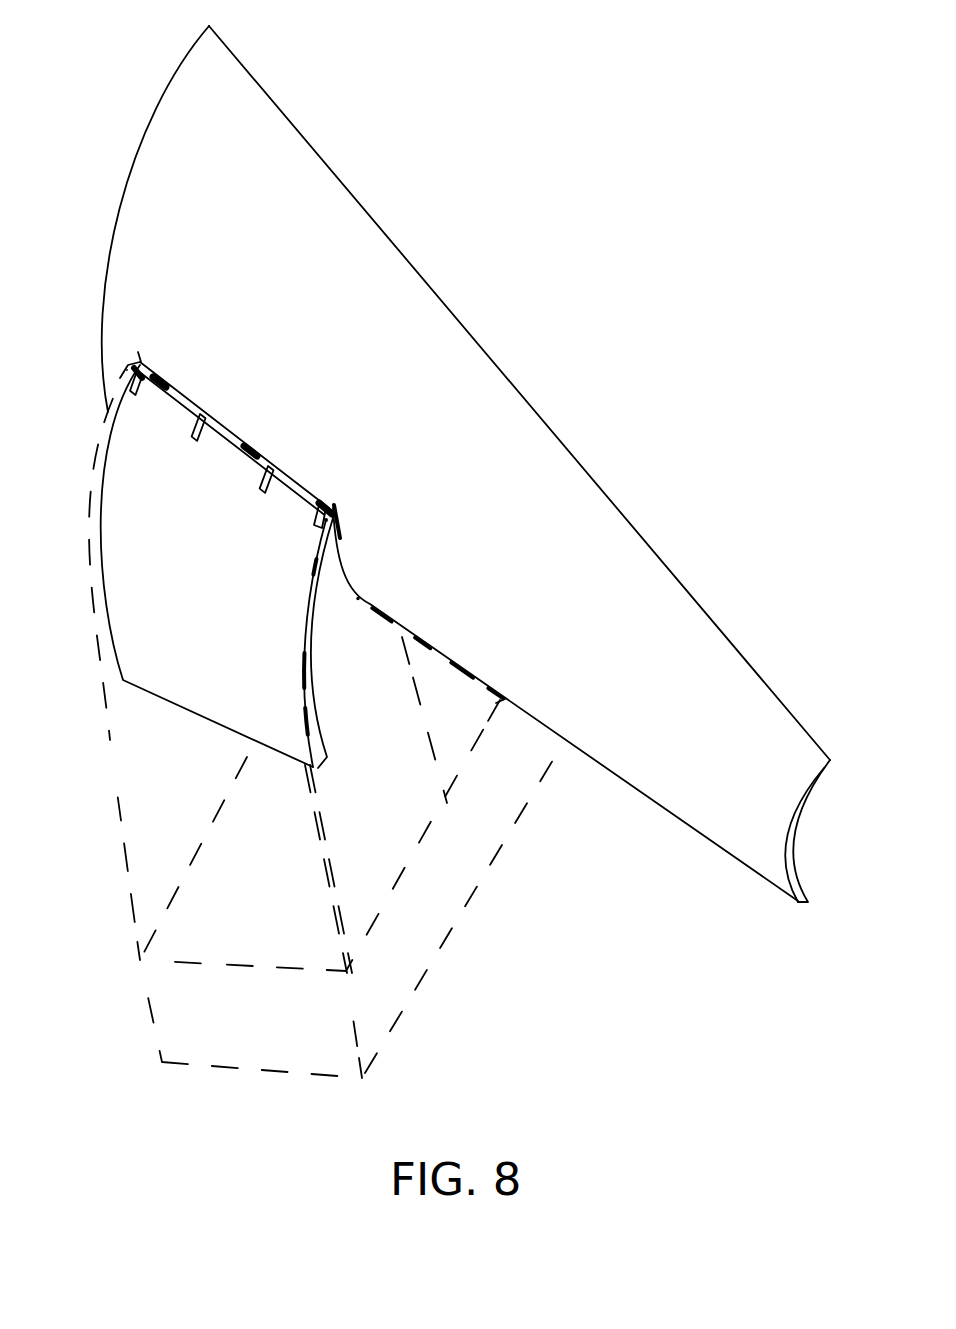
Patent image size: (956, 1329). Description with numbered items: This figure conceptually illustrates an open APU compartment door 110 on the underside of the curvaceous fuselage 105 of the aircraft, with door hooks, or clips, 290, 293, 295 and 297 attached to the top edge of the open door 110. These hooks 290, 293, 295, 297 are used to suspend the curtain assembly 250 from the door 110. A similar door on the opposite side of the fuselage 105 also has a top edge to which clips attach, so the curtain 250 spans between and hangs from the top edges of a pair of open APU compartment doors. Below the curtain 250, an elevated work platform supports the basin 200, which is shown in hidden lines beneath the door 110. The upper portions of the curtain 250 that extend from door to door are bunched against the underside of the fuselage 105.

The fuselage 105 is at (468, 392).
The APU compartment door 110 is at (125, 562).
The door hook 290 is at (145, 367).
The hinge tab 293 is at (200, 412).
The door hook 295 is at (270, 468).
The door hook 297 is at (318, 498).
The curtain assembly 250 is at (380, 797).
The basin 200 is at (408, 942).